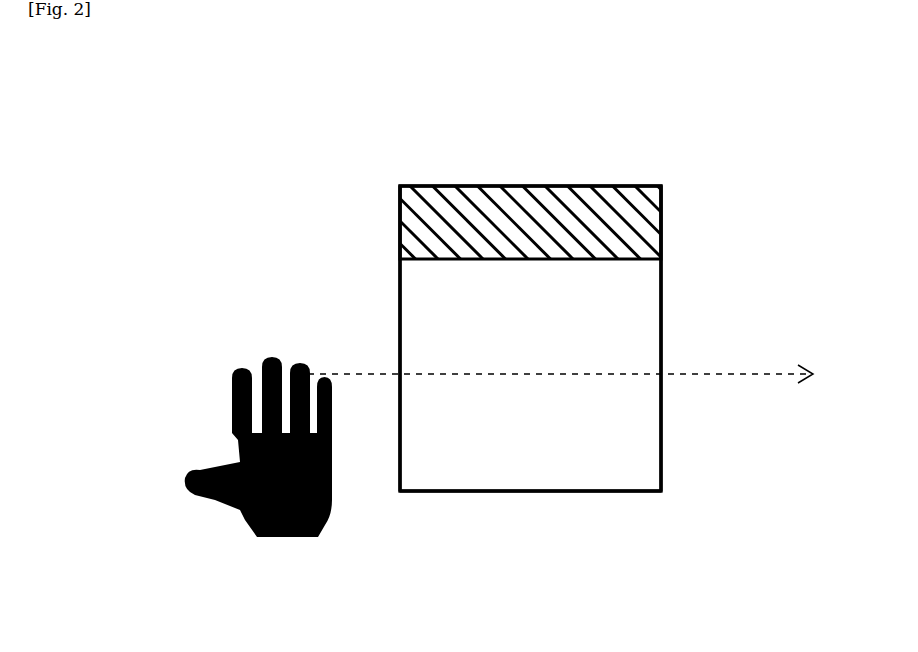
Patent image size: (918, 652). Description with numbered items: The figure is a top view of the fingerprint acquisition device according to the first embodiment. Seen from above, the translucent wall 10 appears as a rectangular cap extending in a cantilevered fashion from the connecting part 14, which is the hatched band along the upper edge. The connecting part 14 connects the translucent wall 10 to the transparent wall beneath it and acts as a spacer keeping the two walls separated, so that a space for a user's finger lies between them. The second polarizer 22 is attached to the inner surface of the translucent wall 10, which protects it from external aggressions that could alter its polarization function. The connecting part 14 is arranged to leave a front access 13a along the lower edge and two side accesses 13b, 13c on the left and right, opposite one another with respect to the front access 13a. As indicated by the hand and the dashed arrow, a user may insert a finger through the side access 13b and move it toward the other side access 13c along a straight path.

The translucent wall 10 is at (400, 285).
The second polarizer 22 is at (433, 338).
The connecting part 14 is at (531, 186).
The front access 13a is at (532, 506).
The side access 13b is at (382, 339).
The side access 13c is at (673, 464).